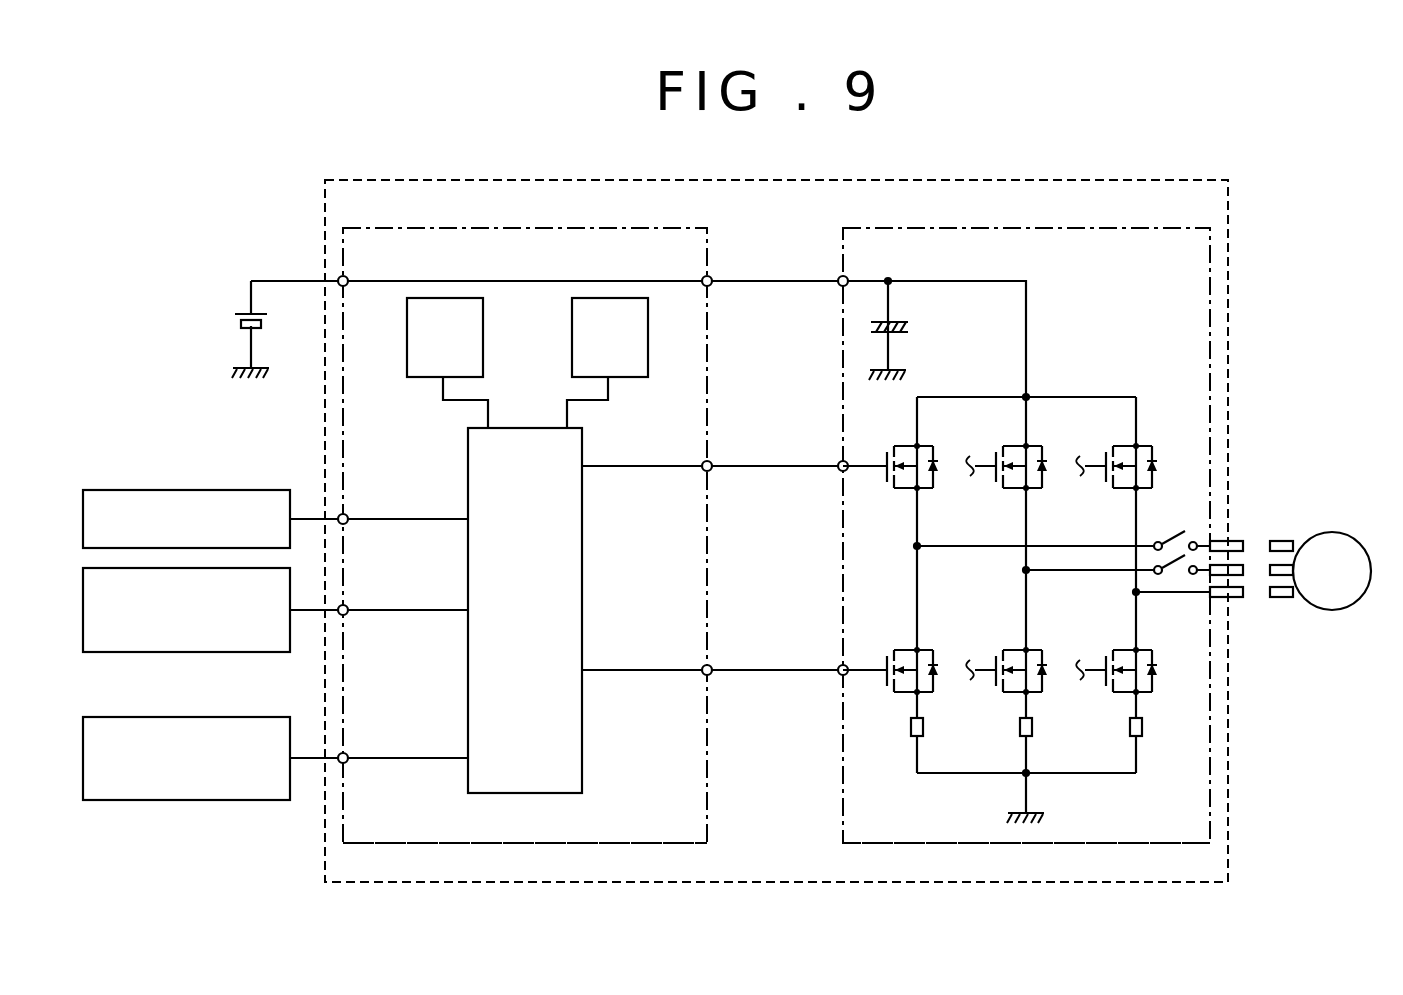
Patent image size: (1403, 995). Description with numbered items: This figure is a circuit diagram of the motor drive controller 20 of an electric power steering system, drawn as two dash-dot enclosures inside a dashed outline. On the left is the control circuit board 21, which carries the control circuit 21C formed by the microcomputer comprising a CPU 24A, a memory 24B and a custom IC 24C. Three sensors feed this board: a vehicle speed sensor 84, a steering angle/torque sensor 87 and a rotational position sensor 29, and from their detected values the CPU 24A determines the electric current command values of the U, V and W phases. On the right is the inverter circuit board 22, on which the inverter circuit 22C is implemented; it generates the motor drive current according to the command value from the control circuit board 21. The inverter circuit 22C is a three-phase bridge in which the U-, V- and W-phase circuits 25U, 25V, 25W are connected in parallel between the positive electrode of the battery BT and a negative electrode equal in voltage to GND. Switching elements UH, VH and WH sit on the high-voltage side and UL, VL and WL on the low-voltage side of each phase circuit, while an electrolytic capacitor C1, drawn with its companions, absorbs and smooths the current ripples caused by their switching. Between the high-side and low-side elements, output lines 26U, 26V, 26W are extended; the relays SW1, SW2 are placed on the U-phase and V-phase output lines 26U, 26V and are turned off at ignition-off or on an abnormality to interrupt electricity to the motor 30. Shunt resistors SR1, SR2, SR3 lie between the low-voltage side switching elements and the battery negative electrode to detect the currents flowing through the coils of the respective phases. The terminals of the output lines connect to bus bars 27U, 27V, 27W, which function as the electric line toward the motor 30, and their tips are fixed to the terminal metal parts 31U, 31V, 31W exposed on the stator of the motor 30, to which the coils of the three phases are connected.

The motor drive controller 20 is at (428, 180).
The control circuit board 21 is at (625, 228).
The control circuit 21C is at (585, 808).
The inverter circuit board 22 is at (1057, 228).
The inverter circuit 22C is at (1085, 808).
The CPU 24A is at (545, 795).
The memory 24B is at (425, 378).
The custom IC 24C is at (620, 378).
The U-phase circuit 25U is at (930, 740).
The V-phase circuit 25V is at (1043, 750).
The W-phase circuit 25W is at (1150, 758).
The U-phase output line 26U is at (945, 546).
The V-phase output line 26V is at (1040, 570).
The W-phase output line 26W is at (1165, 592).
The U-phase bus bar 27U is at (1243, 548).
The V-phase bus bar 27V is at (1243, 571).
The W-phase bus bar 27W is at (1243, 595).
The rotational position sensor 29 is at (223, 802).
The motor 30 is at (1360, 535).
The U-phase terminal metal part 31U is at (1292, 543).
The V-phase terminal metal part 31V is at (1283, 565).
The W-phase terminal metal part 31W is at (1266, 588).
The vehicle speed sensor 84 is at (215, 490).
The steering angle/torque sensor 87 is at (225, 652).
The battery BT is at (238, 318).
The electrolytic capacitor C1 is at (968, 352).
The relay SW1 is at (1178, 530).
The relay SW2 is at (1176, 582).
The shunt resistor SR1 is at (911, 730).
The shunt resistor SR2 is at (1021, 730).
The shunt resistor SR3 is at (1128, 730).